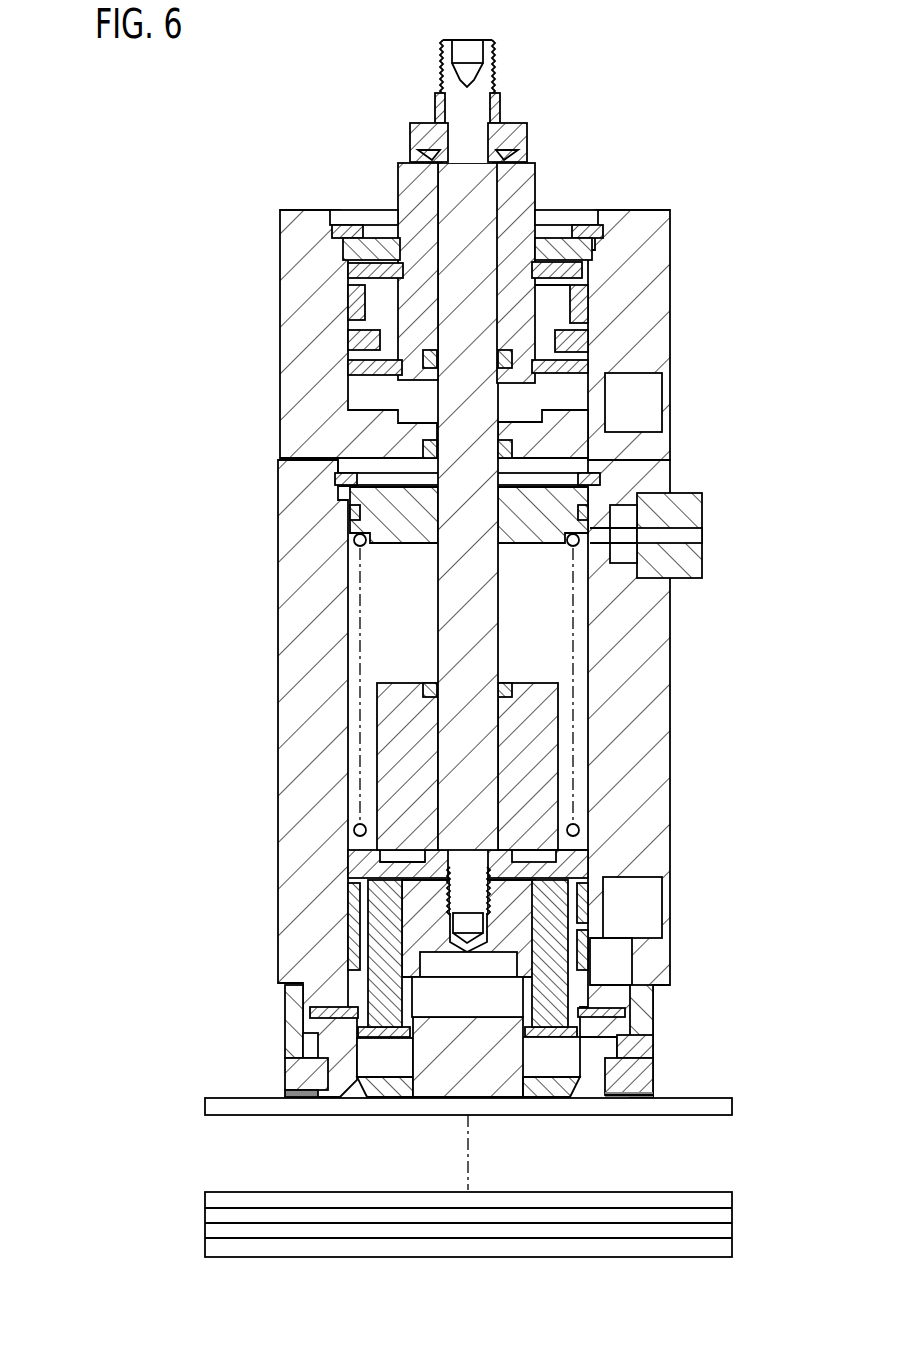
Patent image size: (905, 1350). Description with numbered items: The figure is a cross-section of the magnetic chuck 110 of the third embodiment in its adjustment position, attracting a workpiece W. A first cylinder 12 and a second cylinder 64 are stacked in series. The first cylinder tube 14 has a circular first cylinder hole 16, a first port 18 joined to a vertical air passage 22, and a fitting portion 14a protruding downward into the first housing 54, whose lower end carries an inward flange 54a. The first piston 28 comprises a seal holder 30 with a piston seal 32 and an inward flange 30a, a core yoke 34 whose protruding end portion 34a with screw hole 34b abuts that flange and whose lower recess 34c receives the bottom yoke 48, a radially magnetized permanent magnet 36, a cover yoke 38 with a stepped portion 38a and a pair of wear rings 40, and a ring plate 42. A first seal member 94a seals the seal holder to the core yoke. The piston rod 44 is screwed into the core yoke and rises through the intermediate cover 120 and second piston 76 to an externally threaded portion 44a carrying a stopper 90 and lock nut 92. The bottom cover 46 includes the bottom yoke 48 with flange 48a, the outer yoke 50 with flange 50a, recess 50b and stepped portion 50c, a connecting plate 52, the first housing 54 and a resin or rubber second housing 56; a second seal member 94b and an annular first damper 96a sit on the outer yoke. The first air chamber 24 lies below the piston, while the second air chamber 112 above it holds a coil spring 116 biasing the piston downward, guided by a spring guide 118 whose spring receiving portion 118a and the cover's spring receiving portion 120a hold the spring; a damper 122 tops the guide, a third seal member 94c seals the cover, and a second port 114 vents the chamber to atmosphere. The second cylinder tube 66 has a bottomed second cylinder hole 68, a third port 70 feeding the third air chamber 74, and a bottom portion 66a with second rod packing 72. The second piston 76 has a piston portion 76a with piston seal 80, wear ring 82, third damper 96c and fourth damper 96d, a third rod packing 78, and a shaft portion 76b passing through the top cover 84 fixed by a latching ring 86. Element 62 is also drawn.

The magnetic chuck 110 is at (224, 112).
The first cylinder 12 is at (268, 481).
The first cylinder tube 14 is at (295, 732).
The fitting portion 14a is at (628, 1003).
The first cylinder hole 16 is at (370, 600).
The first port 18 is at (650, 906).
The air passage 22 is at (605, 966).
The first air chamber 24 is at (366, 1062).
The first piston 28 is at (333, 897).
The seal holder 30 is at (368, 826).
The flange 30a is at (568, 826).
The piston seal 32 is at (360, 860).
The core yoke 34 is at (448, 975).
The protruding end portion 34a is at (440, 852).
The screw hole 34b is at (468, 880).
The recess 34c is at (468, 1057).
The permanent magnet 36 is at (385, 932).
The cover yoke 38 is at (582, 912).
The stepped portion 38a is at (354, 962).
The wear rings 40 is at (583, 950).
The ring plate 42 is at (387, 1032).
The piston rod 44 is at (490, 625).
The externally threaded portion 44a is at (492, 110).
The bottom cover 46 is at (437, 1108).
The bottom yoke 48 is at (490, 1090).
The flange 48a is at (523, 1085).
The outer yoke 50 is at (595, 1058).
The flange 50a is at (640, 1045).
The recess 50b is at (632, 1095).
The stepped portion 50c is at (570, 1092).
The connecting plate 52 is at (385, 1090).
The first housing 54 is at (293, 1035).
The flange 54a is at (305, 1070).
The second housing 56 is at (300, 1098).
The plate 62 is at (600, 480).
The second cylinder 64 is at (261, 251).
The second cylinder tube 66 is at (330, 337).
The bottom portion 66a is at (382, 422).
The second cylinder hole 68 is at (362, 345).
The third port 70 is at (648, 410).
The second rod packing 72 is at (515, 450).
The third air chamber 74 is at (356, 378).
The second piston 76 is at (378, 297).
The piston portion 76a is at (557, 292).
The shaft portion 76b is at (522, 180).
The third rod packing 78 is at (428, 352).
The piston seal 80 is at (575, 342).
The wear ring 82 is at (583, 302).
The top cover 84 is at (603, 242).
The latching ring 86 is at (598, 235).
The stopper 90 is at (425, 142).
The lock nut 92 is at (436, 104).
The first seal member 94a is at (503, 880).
The second seal member 94b is at (328, 1011).
The third seal member 94c is at (352, 512).
The first damper 96a is at (640, 1074).
The third damper 96c is at (562, 376).
The fourth damper 96d is at (558, 280).
The second air chamber 112 is at (377, 650).
The second port 114 is at (688, 534).
The coil spring 116 is at (366, 546).
The spring guide 118 is at (524, 690).
The spring receiving portion 118a is at (510, 851).
The intermediate cover 120 is at (522, 520).
The spring receiving portion 120a is at (350, 545).
The damper 122 is at (430, 698).
The wafer W is at (706, 1114).